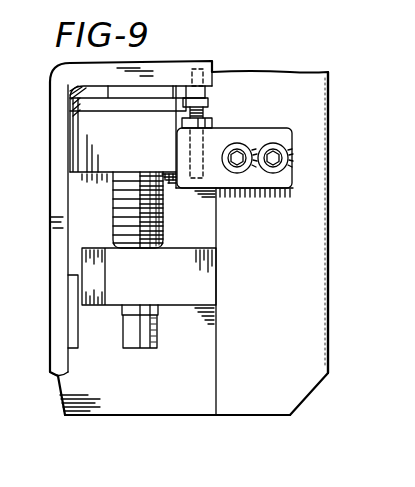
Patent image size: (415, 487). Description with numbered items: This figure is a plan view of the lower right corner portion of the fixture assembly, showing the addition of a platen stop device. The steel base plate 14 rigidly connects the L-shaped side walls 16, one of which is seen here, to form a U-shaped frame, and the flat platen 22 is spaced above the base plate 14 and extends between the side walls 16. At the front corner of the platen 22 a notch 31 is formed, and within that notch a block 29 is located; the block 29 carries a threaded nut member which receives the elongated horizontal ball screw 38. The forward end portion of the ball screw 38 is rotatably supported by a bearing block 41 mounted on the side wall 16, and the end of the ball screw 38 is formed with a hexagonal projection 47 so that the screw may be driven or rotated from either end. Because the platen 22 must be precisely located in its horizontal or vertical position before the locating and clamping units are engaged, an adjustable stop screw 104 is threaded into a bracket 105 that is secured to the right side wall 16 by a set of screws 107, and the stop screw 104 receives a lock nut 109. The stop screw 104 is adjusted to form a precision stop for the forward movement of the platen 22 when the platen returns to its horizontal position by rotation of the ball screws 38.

The base plate 14 is at (183, 395).
The side wall 16 is at (323, 212).
The platen 22 is at (53, 267).
The block 29 is at (83, 143).
The notch 31 is at (65, 200).
The ball screw 38 is at (118, 210).
The bearing block 41 is at (108, 282).
The hexagonal projection 47 is at (143, 350).
The stop screw 104 is at (203, 112).
The bracket 105 is at (285, 140).
The screws 107 is at (270, 172).
The lock nut 109 is at (192, 122).